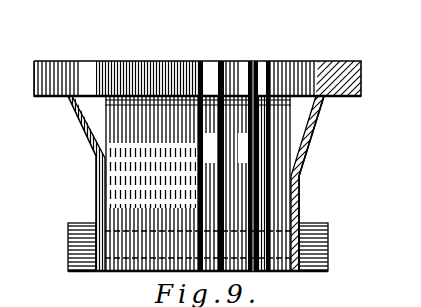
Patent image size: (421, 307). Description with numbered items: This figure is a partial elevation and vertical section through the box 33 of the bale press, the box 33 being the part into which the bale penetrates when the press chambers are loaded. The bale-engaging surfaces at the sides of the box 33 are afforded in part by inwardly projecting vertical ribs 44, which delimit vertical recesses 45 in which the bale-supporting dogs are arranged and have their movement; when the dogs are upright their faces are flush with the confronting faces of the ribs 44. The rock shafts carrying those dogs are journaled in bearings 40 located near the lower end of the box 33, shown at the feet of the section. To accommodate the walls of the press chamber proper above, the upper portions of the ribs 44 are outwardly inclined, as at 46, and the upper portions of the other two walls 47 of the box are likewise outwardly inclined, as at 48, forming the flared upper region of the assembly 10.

The spring assembly 10 is at (197, 139).
The box 33 is at (297, 143).
The bearings 40 is at (68, 242).
The vertical ribs 44 is at (258, 62).
The vertical recesses 45 is at (247, 188).
The outward inclination of the ribs 46 is at (233, 122).
The walls 47 is at (290, 173).
The outward inclination of the walls 48 is at (67, 84).